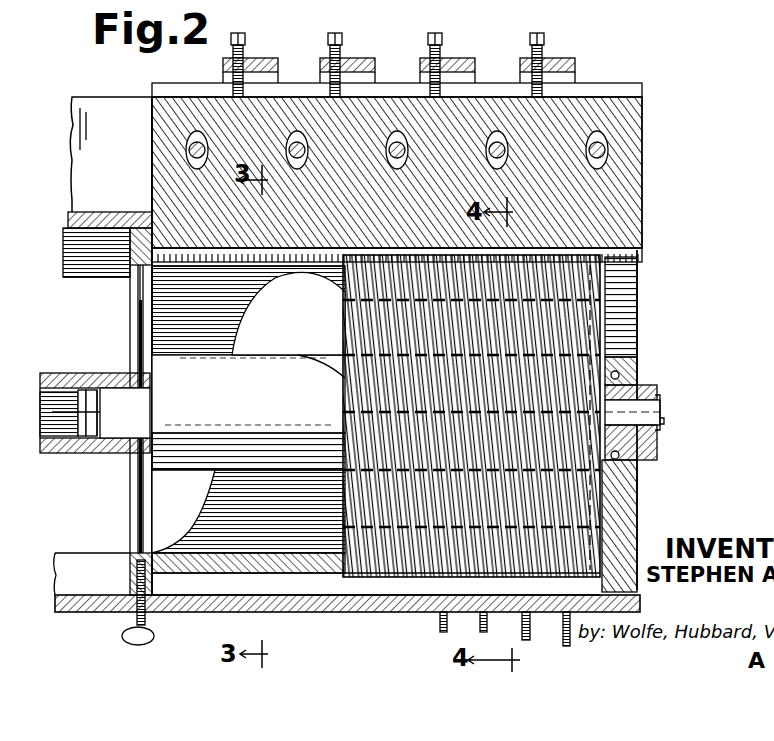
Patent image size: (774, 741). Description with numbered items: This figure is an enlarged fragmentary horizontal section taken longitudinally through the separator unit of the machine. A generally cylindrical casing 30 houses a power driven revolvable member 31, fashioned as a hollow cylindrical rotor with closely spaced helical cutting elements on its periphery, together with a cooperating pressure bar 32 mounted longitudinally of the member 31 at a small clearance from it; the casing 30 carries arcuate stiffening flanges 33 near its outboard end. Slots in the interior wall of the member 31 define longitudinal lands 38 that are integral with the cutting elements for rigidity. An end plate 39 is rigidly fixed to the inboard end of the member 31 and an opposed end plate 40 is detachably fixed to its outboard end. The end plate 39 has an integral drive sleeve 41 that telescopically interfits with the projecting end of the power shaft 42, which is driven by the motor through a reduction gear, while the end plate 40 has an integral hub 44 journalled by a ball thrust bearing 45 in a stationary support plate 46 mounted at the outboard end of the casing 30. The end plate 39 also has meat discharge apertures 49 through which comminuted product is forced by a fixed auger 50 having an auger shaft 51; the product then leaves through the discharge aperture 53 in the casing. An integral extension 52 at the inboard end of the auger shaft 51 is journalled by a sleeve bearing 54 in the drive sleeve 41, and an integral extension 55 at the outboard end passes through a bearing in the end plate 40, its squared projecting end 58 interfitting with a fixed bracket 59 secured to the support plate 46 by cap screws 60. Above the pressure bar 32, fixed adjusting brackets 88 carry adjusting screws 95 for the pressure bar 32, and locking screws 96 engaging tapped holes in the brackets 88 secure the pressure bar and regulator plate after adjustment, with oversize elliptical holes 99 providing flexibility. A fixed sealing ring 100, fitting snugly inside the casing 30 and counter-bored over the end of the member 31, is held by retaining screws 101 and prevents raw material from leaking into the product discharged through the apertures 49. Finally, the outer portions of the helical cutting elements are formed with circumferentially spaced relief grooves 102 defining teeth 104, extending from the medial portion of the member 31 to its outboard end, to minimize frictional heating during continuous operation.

The casing 30 is at (186, 612).
The revolvable member 31 is at (244, 584).
The pressure bar 32 is at (178, 110).
The arcuate stiffening flange 33 is at (562, 628).
The longitudinal lands 38 is at (507, 588).
The end plate 39 is at (140, 558).
The end plate 40 is at (600, 305).
The drive sleeve 41 is at (62, 373).
The power shaft 42 is at (88, 376).
The hub 44 is at (630, 398).
The ball thrust bearing 45 is at (625, 380).
The support plate 46 is at (622, 522).
The meat discharge apertures 49 is at (147, 314).
The auger 50 is at (277, 318).
The auger shaft 51 is at (140, 466).
The extension 52 is at (110, 430).
The discharge aperture 53 is at (92, 280).
The sleeve bearing 54 is at (150, 390).
The extension 55 is at (665, 397).
The projecting end 58 is at (632, 410).
The fixed bracket 59 is at (658, 440).
The cap screws 60 is at (664, 424).
The adjusting brackets 88 is at (278, 68).
The adjusting screws 95 is at (231, 38).
The locking screws 96 is at (190, 152).
The elliptical holes 99 is at (185, 148).
The sealing ring 100 is at (130, 580).
The retaining screws 101 is at (124, 640).
The relief grooves 102 is at (382, 345).
The teeth 104 is at (388, 395).